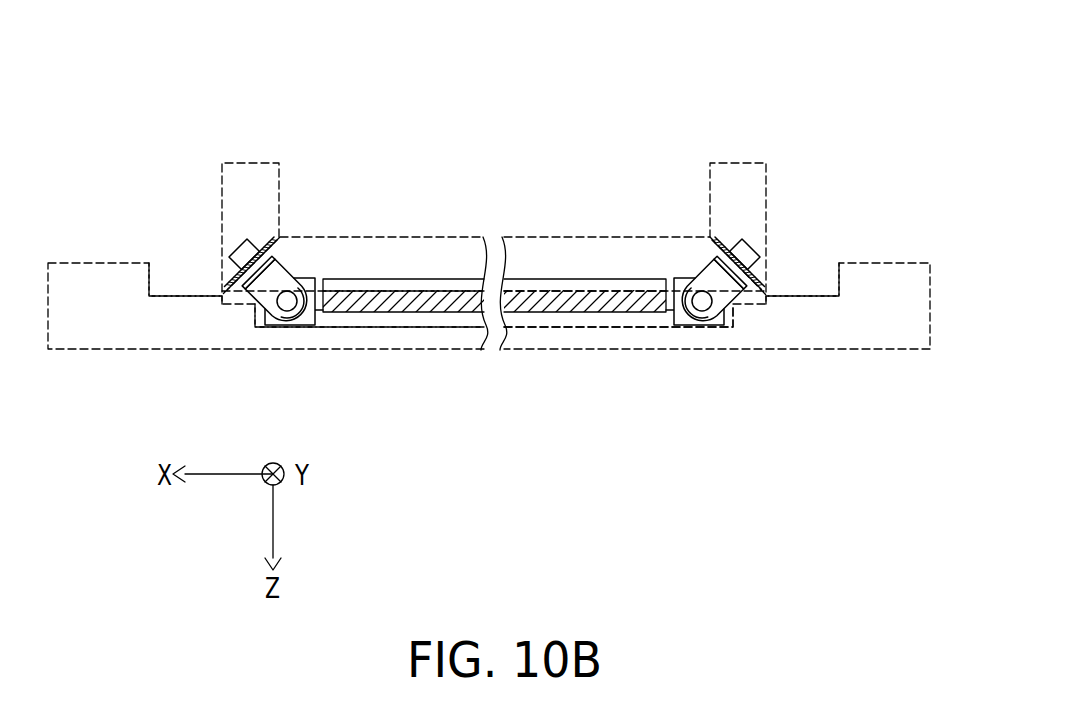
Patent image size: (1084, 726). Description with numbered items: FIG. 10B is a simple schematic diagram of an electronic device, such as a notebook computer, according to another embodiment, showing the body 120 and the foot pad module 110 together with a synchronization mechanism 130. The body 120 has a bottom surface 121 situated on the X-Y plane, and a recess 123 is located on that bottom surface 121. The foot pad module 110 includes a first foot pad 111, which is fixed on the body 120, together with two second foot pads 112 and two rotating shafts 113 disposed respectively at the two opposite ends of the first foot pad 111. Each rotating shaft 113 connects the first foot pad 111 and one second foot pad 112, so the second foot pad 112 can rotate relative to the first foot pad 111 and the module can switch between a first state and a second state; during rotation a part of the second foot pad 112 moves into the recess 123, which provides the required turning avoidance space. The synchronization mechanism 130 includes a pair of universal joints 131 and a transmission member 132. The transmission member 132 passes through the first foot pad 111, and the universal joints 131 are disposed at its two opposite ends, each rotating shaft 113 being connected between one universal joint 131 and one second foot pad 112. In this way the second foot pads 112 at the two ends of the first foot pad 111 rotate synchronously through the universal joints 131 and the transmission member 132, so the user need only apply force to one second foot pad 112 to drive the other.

The foot pad module 110 is at (532, 37).
The first foot pad 111 is at (432, 243).
The second foot pad 112 is at (280, 163).
The rotating shaft 113 is at (245, 248).
The body 120 is at (489, 318).
The bottom surface 121 is at (543, 292).
The recess 123 is at (200, 279).
The synchronization mechanism 130 is at (652, 37).
The universal joint 131 is at (300, 283).
The transmission member 132 is at (392, 318).